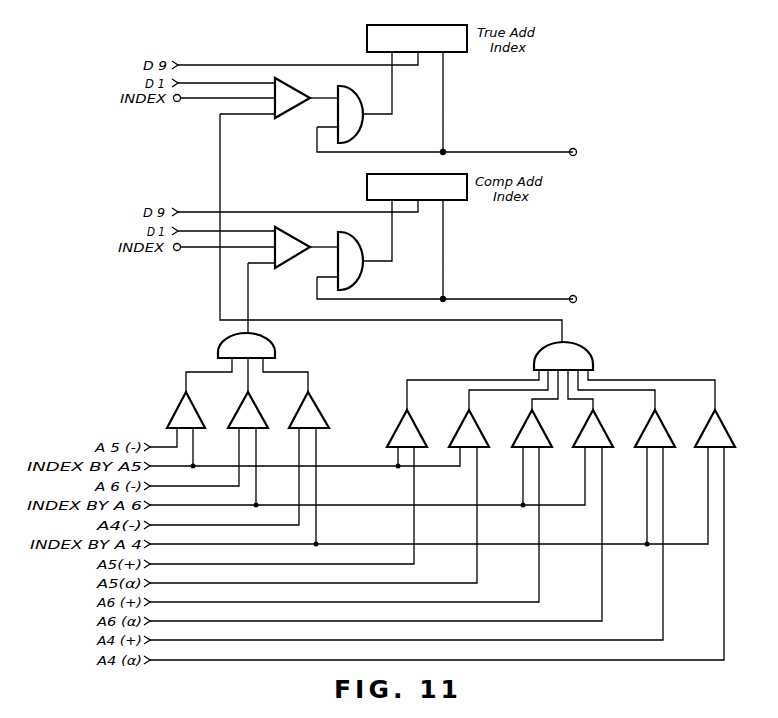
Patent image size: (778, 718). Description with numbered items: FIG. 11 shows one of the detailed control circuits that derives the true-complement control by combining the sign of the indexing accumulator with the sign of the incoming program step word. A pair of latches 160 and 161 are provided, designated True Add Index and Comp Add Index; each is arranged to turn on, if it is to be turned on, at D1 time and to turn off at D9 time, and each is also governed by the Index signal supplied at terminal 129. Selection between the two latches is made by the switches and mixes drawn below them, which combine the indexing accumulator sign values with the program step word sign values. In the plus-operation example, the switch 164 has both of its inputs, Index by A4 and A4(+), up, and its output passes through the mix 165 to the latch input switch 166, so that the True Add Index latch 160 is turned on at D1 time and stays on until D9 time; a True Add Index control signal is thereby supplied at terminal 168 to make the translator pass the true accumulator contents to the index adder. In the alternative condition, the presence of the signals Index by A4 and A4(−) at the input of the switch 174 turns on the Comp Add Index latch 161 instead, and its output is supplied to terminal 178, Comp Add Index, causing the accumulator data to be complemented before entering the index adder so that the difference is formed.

The True Add Index latch 160 is at (367, 41).
The Comp Add Index latch 161 is at (367, 186).
The latch input switch 166 is at (275, 115).
The True Add Index terminal 168 is at (568, 151).
The Comp Add Index terminal 178 is at (568, 298).
The Index signal terminal 129 is at (177, 102).
The switch 174 is at (301, 406).
The mix 165 is at (536, 360).
The switch 164 is at (649, 420).